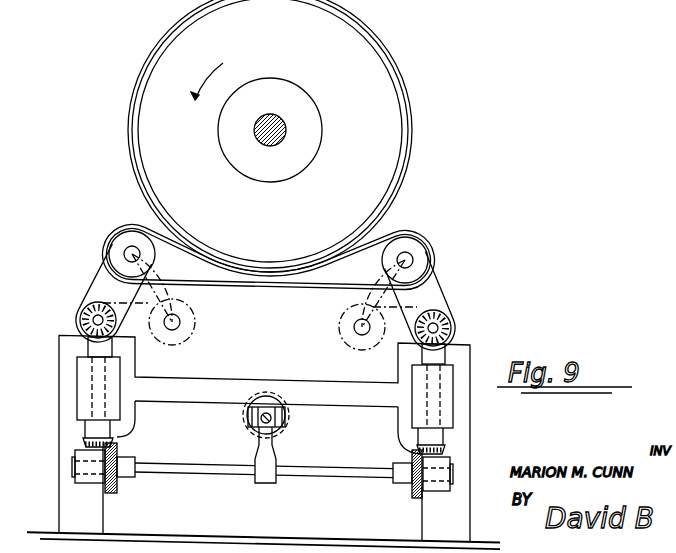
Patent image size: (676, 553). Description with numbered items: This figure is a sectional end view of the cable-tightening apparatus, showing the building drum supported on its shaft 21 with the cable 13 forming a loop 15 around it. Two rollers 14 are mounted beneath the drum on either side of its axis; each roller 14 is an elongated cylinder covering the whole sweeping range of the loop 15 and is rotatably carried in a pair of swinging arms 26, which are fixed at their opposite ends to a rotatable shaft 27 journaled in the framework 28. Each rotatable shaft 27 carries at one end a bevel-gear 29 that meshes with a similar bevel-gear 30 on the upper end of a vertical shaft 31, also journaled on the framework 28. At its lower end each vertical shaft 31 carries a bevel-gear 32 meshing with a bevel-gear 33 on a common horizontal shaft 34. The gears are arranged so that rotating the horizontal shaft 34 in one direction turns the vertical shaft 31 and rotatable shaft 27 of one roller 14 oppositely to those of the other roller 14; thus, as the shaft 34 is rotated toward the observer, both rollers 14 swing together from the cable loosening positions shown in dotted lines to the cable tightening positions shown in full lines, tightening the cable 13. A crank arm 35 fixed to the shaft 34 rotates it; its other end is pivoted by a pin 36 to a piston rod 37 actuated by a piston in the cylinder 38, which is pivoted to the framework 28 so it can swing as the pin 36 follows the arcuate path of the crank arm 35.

The cable 13 is at (273, 286).
The roller 14 is at (128, 232).
The loop 15 is at (413, 134).
The shaft 21 is at (285, 129).
The swinging arm 26 is at (103, 268).
The rotatable shaft 27 is at (92, 318).
The framework 28 is at (473, 368).
The bevel-gear 29 is at (88, 305).
The bevel-gear 30 is at (85, 334).
The vertical shaft 31 is at (90, 385).
The bevel-gear 32 is at (83, 438).
The bevel-gear 33 is at (117, 452).
The horizontal shaft 34 is at (308, 477).
The crank arm 35 is at (258, 448).
The pin 36 is at (248, 417).
The piston rod 37 is at (285, 418).
The cylinder 38 is at (250, 416).